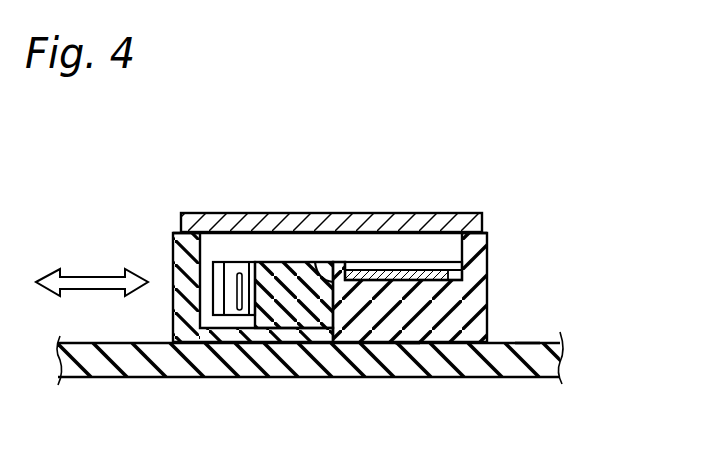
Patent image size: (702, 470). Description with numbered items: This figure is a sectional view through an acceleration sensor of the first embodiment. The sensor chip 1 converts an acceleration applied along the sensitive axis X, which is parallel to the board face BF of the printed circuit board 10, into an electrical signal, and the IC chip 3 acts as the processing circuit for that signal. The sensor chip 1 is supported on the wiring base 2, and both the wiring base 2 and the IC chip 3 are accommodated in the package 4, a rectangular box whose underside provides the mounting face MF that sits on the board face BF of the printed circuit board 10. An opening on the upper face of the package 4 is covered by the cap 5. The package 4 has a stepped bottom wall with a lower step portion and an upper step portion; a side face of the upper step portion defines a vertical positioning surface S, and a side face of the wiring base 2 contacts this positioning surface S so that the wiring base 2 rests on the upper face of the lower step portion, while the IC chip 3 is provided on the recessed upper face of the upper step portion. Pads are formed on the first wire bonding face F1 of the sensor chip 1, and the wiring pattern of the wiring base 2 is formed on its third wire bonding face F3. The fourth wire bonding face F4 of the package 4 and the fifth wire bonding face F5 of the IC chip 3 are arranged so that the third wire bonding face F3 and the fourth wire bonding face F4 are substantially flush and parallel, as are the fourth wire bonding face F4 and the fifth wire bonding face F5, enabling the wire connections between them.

The sensor chip 1 is at (203, 232).
The wiring base 2 is at (295, 262).
The IC chip 3 is at (431, 262).
The package 4 is at (489, 290).
The cap 5 is at (410, 213).
The printed circuit board 10 is at (457, 378).
The first wire bonding face F1 is at (243, 300).
The third wire bonding face F3 is at (255, 262).
The fourth wire bonding face F4 is at (450, 270).
The fifth wire bonding face F5 is at (373, 262).
The positioning surface S is at (315, 262).
The sensitive axis X is at (92, 265).
The mounting face MF is at (408, 343).
The board face BF is at (528, 342).